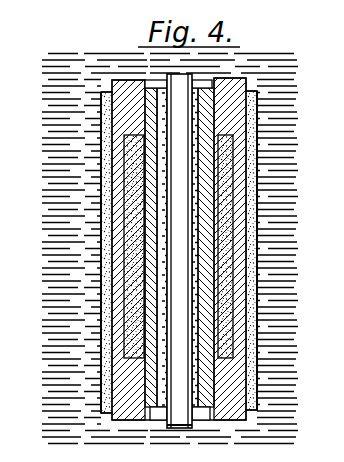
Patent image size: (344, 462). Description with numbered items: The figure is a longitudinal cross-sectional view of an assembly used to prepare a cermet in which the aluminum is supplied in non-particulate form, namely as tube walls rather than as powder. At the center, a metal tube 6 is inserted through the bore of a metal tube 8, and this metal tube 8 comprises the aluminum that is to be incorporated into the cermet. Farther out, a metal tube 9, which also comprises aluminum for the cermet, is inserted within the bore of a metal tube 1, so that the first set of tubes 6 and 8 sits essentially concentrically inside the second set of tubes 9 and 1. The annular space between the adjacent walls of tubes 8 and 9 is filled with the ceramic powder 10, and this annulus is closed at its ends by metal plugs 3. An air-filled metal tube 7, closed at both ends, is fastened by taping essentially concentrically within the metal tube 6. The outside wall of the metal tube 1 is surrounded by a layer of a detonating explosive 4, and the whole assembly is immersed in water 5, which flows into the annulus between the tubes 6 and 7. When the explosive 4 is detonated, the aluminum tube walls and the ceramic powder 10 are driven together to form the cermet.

The metal tube 1 is at (243, 141).
The metal plugs 3 is at (230, 91).
The detonating explosive 4 is at (258, 217).
The water 5 is at (73, 237).
The metal tube 6 is at (205, 248).
The air-filled metal tube 7 is at (190, 288).
The metal tube 8 is at (220, 320).
The metal tube 9 is at (240, 340).
The ceramic powder 10 is at (225, 183).